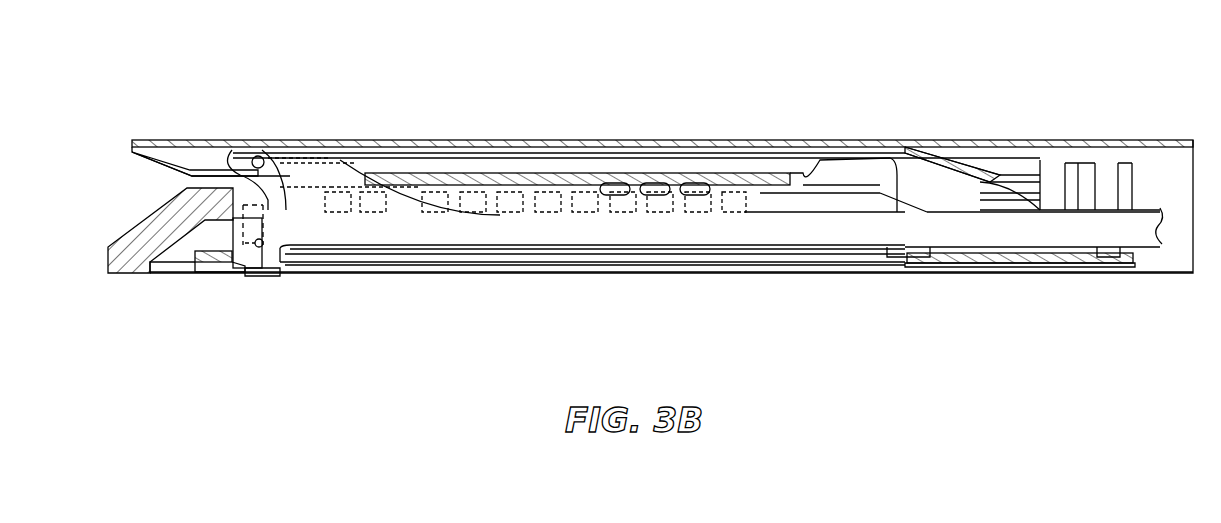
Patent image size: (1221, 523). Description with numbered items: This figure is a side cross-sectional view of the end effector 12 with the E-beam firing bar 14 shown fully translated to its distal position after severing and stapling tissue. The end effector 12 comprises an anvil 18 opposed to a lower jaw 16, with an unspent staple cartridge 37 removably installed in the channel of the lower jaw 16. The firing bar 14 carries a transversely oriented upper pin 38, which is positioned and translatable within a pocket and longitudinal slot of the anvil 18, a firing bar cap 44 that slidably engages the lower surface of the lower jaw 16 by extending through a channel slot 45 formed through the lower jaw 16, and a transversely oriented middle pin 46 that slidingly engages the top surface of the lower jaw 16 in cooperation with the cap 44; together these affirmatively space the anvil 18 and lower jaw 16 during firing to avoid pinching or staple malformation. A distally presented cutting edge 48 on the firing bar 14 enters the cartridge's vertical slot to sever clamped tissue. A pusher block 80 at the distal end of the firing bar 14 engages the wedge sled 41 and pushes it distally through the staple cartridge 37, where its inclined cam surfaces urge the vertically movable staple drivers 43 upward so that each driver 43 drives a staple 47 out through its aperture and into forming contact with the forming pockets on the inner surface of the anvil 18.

The end effector 12 is at (572, 78).
The firing bar 14 is at (455, 242).
The lower jaw 16 is at (975, 276).
The anvil 18 is at (752, 140).
The staple cartridge 37 is at (124, 205).
The upper pin 38 is at (258, 156).
The wedge sled 41 is at (190, 237).
The staple drivers 43 is at (620, 212).
The firing bar cap 44 is at (280, 272).
The channel slot 45 is at (527, 263).
The middle pin 46 is at (258, 248).
The staples 47 is at (617, 183).
The cutting edge 48 is at (278, 196).
The pusher block 80 is at (233, 240).